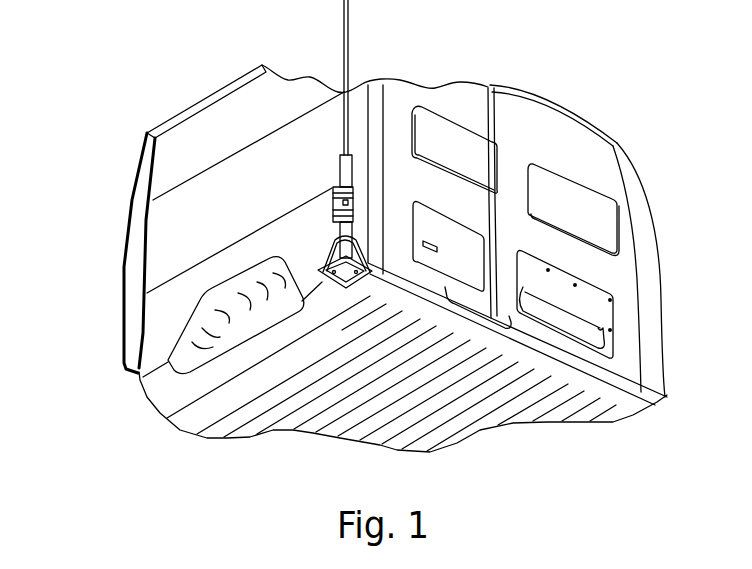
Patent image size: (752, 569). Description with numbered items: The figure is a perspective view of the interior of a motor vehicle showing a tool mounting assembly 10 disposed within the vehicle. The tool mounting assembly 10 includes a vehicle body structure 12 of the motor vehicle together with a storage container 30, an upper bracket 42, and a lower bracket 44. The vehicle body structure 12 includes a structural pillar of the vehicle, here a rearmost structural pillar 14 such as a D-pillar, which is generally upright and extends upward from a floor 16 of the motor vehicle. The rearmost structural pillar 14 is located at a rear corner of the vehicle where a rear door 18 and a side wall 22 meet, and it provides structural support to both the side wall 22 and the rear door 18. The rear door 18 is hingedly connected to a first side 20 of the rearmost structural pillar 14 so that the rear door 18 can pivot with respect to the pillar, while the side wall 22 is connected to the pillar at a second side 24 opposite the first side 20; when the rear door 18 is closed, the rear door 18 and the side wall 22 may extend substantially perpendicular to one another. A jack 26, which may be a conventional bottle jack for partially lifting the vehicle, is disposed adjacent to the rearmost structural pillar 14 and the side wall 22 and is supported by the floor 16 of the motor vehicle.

The tool mounting assembly 10 is at (322, 128).
The vehicle body structure 12 is at (192, 100).
The rearmost structural pillar 14 is at (319, 177).
The floor 16 is at (258, 428).
The rear door 18 is at (458, 97).
The first side 20 is at (382, 105).
The side wall 22 is at (147, 243).
The second side 24 is at (350, 107).
The jack 26 is at (328, 293).
The storage container 30 is at (330, 202).
The upper bracket 42 is at (338, 170).
The lower bracket 44 is at (338, 232).